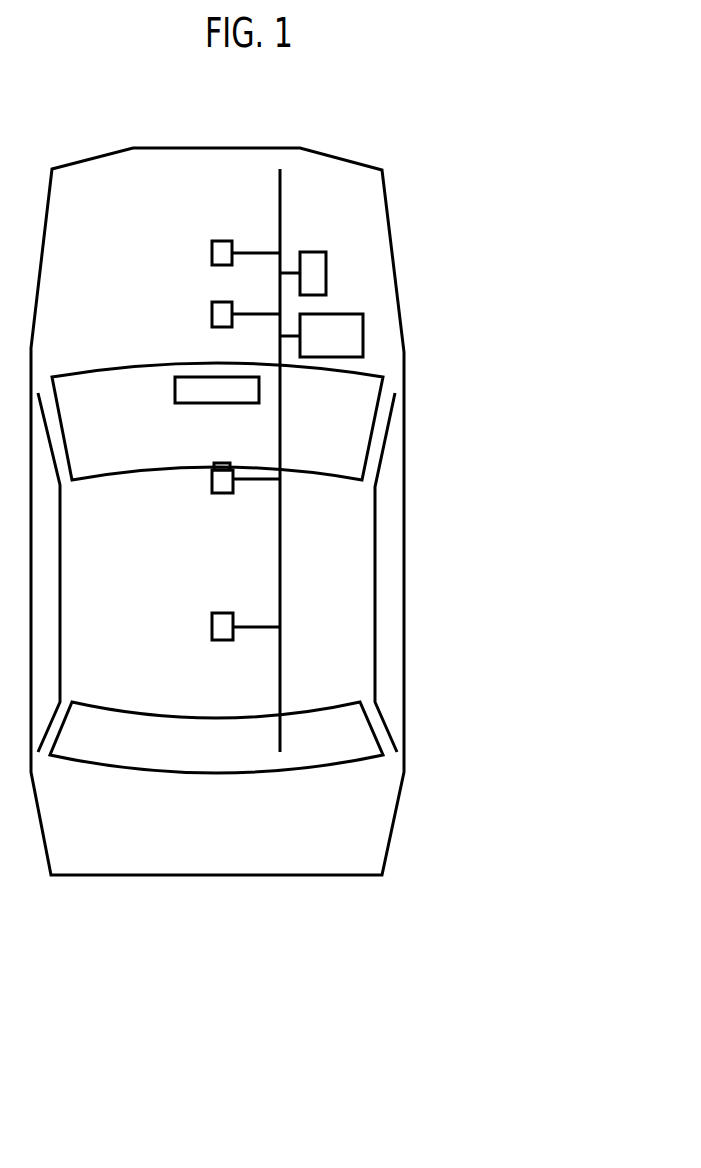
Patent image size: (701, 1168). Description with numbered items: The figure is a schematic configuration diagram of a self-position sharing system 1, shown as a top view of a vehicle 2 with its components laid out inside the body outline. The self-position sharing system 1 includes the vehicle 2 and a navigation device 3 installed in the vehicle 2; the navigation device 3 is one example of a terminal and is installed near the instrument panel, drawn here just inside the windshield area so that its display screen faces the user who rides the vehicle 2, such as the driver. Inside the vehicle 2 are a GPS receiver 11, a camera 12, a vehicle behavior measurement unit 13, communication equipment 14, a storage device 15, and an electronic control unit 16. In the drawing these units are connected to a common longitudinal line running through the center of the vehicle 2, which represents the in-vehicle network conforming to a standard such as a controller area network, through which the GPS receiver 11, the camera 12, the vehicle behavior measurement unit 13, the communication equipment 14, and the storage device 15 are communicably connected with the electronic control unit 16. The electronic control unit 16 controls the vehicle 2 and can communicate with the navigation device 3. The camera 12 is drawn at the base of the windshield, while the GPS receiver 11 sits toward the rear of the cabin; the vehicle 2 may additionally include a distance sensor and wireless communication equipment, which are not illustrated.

The self-position sharing system 1 is at (553, 931).
The vehicle 2 is at (405, 717).
The navigation device 3 is at (175, 390).
The GPS receiver 11 is at (212, 627).
The camera 12 is at (212, 488).
The vehicle behavior measurement unit 13 is at (212, 253).
The communication equipment 14 is at (212, 314).
The storage device 15 is at (326, 268).
The electronic control unit 16 is at (363, 333).